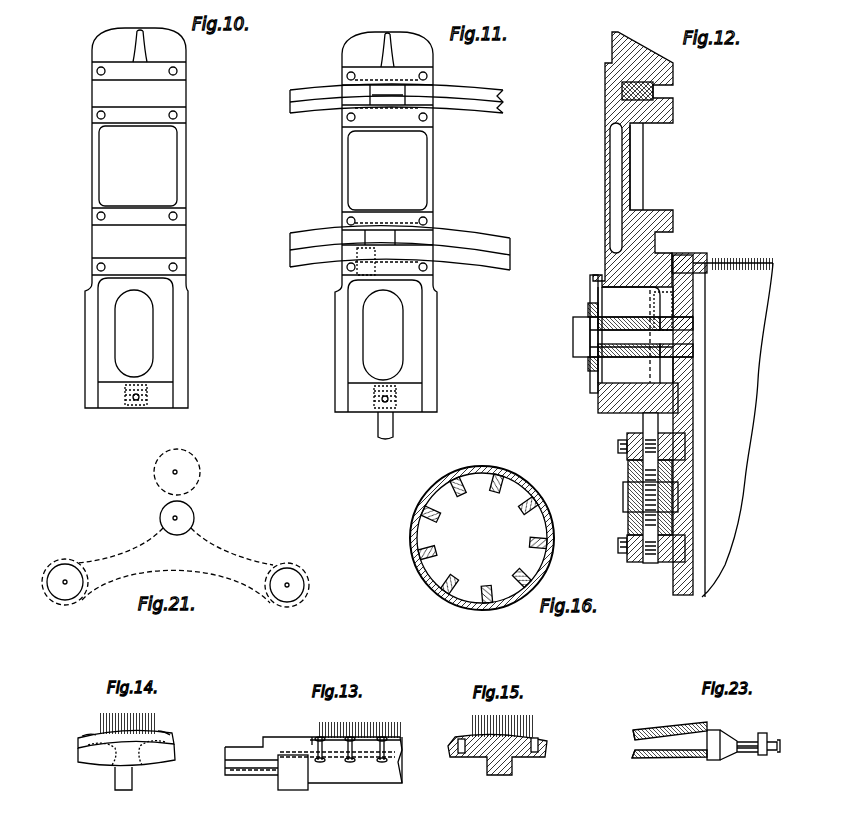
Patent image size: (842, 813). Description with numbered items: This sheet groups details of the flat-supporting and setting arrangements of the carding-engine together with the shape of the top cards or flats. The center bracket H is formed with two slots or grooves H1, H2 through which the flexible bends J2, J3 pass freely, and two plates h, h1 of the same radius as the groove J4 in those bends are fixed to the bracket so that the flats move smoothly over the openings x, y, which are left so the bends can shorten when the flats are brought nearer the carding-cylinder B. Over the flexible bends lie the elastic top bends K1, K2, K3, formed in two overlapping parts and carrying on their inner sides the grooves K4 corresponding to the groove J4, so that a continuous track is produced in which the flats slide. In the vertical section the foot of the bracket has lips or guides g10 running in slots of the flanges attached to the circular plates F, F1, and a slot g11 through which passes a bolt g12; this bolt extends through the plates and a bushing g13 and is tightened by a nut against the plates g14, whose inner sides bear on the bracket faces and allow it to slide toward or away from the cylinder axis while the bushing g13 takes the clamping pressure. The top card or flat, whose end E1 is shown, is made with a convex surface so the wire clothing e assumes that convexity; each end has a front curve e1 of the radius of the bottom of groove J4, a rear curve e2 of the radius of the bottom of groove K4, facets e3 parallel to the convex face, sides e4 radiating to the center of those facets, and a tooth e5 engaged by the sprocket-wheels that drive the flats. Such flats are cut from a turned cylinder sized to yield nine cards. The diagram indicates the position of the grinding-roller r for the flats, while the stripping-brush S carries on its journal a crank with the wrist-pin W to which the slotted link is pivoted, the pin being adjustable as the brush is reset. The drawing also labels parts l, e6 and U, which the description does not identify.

In FIG. 10, the center bracket H is at (139, 151).
In FIG. 11, the center bracket H is at (387, 155).
In FIG. 12, the center bracket H is at (644, 166).
In FIG. 10, the slot or groove H2 is at (139, 87).
In FIG. 10, the slot or groove H1 is at (139, 250).
In FIG. 10, the lips or guides g10 is at (85, 343).
In FIG. 11, the lips or guides g10 is at (345, 350).
In FIG. 12, the lips or guides g10 is at (666, 311).
In FIG. 10, the slot g11 is at (134, 333).
In FIG. 11, the slot g11 is at (383, 335).
In FIG. 12, the slot g11 is at (638, 350).
In FIG. 11, the opening y is at (360, 95).
In FIG. 11, the groove K4 is at (298, 97).
In FIG. 11, the top bend K3 is at (396, 114).
In FIG. 11, the top bend K2 is at (467, 125).
In FIG. 11, the plate h is at (387, 218).
In FIG. 12, the plate h is at (682, 217).
In FIG. 11, the flexible bend J3 is at (400, 243).
In FIG. 11, the flexible bend J2 is at (400, 235).
In FIG. 11, the groove J4 is at (505, 256).
In FIG. 11, the plate h1 is at (387, 252).
In FIG. 12, the plate h1 is at (688, 262).
In FIG. 11, the opening x is at (366, 261).
In FIG. 12, the top bend K1 is at (608, 110).
In FIG. 12, the carding-cylinder B is at (733, 427).
In FIG. 12, the circular plate F1 is at (694, 402).
In FIG. 12, the circular plate F is at (690, 502).
In FIG. 12, the bolt g12 is at (575, 338).
In FIG. 12, the bushing g13 is at (592, 318).
In FIG. 12, the plate g14 is at (592, 362).
In FIG. 21, the grinding-roller r is at (177, 472).
In FIG. 21, the roller l is at (175, 554).
In FIG. 21, the wire clothing e is at (175, 564).
In FIG. 14, the wire clothing e is at (132, 721).
In FIG. 13, the wire clothing e is at (351, 752).
In FIG. 15, the wire clothing e is at (507, 726).
In FIG. 14, the curve e1 is at (126, 739).
In FIG. 13, the curve e1 is at (246, 747).
In FIG. 14, the curve e2 is at (126, 763).
In FIG. 14, the curve e3 is at (88, 746).
In FIG. 14, the side e4 is at (80, 762).
In FIG. 14, the tooth e5 is at (123, 778).
In FIG. 13, the tooth e5 is at (293, 772).
In FIG. 14, the fastener e6 is at (172, 735).
In FIG. 15, the fastener e6 is at (455, 752).
In FIG. 13, the end of top card or flat E1 is at (313, 766).
In FIG. 23, the stripping-brush S is at (669, 740).
In FIG. 23, the head U is at (765, 752).
In FIG. 23, the wrist-pin W is at (781, 742).